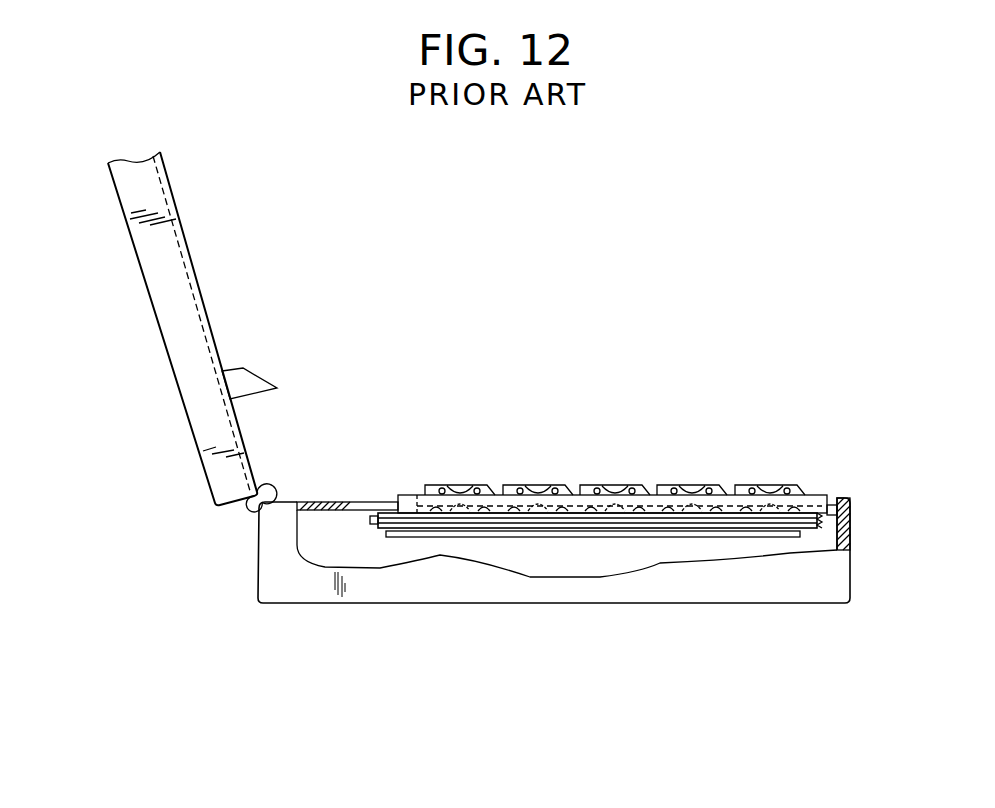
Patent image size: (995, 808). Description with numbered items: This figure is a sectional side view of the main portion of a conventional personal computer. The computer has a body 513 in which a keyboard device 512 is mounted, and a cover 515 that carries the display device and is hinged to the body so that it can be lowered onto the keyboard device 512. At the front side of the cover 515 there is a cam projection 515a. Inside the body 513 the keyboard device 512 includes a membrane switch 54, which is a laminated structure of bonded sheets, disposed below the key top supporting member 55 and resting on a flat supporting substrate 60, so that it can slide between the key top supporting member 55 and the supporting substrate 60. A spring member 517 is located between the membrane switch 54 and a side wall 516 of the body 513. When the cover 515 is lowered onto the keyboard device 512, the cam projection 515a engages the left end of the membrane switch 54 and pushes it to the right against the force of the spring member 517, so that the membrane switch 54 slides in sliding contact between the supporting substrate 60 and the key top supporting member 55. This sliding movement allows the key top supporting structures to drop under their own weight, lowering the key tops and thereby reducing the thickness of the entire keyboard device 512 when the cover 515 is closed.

The cover 515 is at (158, 360).
The cam projection 515a is at (278, 387).
The keyboard device 512 is at (622, 472).
The body 513 is at (372, 610).
The membrane switch 54 is at (647, 542).
The supporting substrate 60 is at (470, 537).
The key top supporting member 55 is at (817, 493).
The spring member 517 is at (833, 545).
The side wall 516 is at (829, 528).